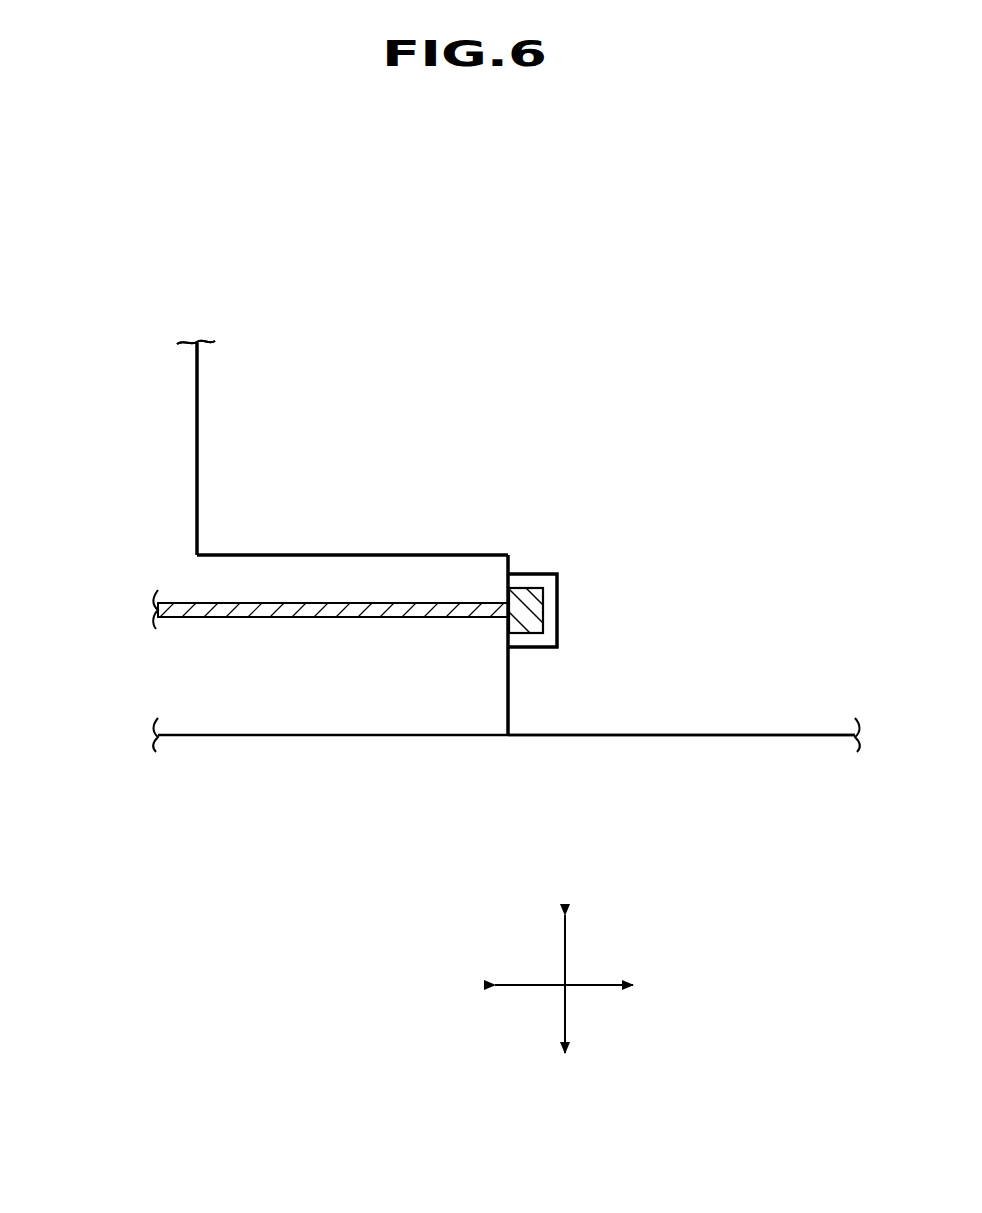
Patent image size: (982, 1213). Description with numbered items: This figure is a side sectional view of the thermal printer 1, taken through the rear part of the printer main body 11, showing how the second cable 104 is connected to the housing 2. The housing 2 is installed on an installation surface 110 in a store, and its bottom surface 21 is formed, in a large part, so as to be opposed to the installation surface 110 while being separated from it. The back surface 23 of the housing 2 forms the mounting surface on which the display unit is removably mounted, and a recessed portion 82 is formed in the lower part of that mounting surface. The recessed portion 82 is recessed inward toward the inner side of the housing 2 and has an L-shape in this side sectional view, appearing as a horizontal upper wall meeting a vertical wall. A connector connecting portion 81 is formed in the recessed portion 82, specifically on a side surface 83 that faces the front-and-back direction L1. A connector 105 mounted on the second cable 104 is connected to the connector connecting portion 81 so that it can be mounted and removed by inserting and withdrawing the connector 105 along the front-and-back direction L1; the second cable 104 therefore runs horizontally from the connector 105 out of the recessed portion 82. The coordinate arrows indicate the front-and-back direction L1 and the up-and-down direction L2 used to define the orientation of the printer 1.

The substrate processing apparatus 1 is at (364, 280).
The housing 2 is at (755, 740).
The printer main body 11 is at (183, 471).
The bottom surface 21 is at (684, 736).
The back surface 23 is at (196, 392).
The connector connecting portion 81 is at (525, 575).
The recessed portion 82 is at (238, 558).
The side surface 83 is at (507, 703).
The second cable 104 is at (250, 618).
The connector 105 is at (525, 628).
The installation surface 110 is at (190, 734).
The front-and-back direction L1 is at (597, 988).
The up-and-down direction L2 is at (563, 1013).